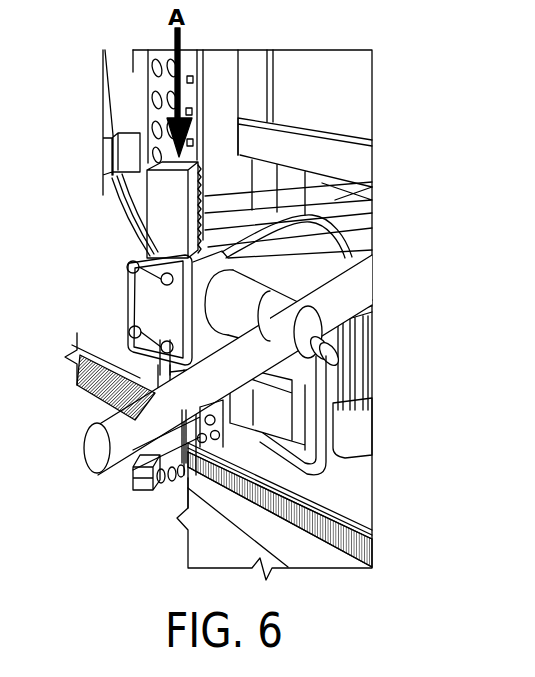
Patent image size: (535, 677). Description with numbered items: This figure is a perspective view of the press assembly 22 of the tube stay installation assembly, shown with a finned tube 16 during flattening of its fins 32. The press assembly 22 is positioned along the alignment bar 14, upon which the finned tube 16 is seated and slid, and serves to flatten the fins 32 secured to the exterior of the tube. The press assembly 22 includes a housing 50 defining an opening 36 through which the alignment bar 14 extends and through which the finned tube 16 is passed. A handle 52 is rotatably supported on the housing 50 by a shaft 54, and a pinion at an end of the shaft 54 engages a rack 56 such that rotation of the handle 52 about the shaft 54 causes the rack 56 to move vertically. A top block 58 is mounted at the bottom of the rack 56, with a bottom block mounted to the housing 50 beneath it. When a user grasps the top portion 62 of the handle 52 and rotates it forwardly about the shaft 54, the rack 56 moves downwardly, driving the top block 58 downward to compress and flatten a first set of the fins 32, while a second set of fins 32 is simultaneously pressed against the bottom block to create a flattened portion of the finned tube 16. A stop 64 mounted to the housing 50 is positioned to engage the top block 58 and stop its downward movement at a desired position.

The alignment bar 14 is at (212, 509).
The finned tube 16 is at (352, 565).
The press assembly 22 is at (298, 160).
The fins 32 is at (327, 545).
The opening 36 is at (227, 445).
The housing 50 is at (183, 307).
The handle 52 is at (92, 427).
The shaft 54 is at (206, 365).
The rack 56 is at (148, 222).
The top block 58 is at (140, 453).
The top portion of handle 62 is at (110, 434).
The stop 64 is at (143, 480).